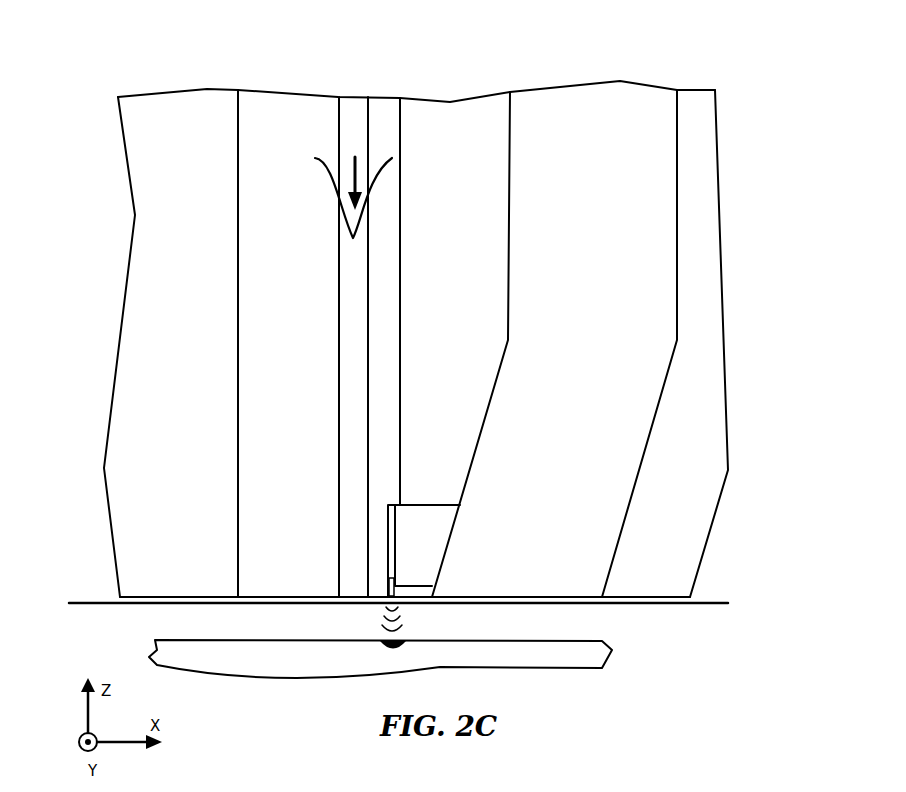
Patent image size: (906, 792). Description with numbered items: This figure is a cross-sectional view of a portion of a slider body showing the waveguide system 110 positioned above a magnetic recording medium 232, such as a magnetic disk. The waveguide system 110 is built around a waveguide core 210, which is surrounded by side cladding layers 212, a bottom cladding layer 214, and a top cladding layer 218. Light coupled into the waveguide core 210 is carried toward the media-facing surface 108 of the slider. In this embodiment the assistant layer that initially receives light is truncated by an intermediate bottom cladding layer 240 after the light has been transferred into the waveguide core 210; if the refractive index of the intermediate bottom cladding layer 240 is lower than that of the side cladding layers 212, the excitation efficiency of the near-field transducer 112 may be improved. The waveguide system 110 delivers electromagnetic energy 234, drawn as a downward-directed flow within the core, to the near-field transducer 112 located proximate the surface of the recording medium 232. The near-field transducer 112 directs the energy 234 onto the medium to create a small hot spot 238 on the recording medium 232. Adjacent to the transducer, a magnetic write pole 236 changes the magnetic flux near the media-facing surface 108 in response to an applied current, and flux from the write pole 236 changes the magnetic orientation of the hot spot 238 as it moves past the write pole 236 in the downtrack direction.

The waveguide system 110 is at (492, 58).
The bottom cladding layer 214 is at (138, 94).
The intermediate bottom cladding layer 240 is at (258, 90).
The waveguide core 210 is at (354, 95).
The side cladding layers 212 is at (393, 105).
The top cladding layer 218 is at (443, 102).
The electromagnetic energy 234 is at (335, 175).
The near-field transducer 112 is at (390, 598).
The magnetic write pole 236 is at (528, 578).
The media-facing surface 108 is at (643, 605).
The magnetic recording medium 232 is at (202, 657).
The hot spot 238 is at (395, 648).